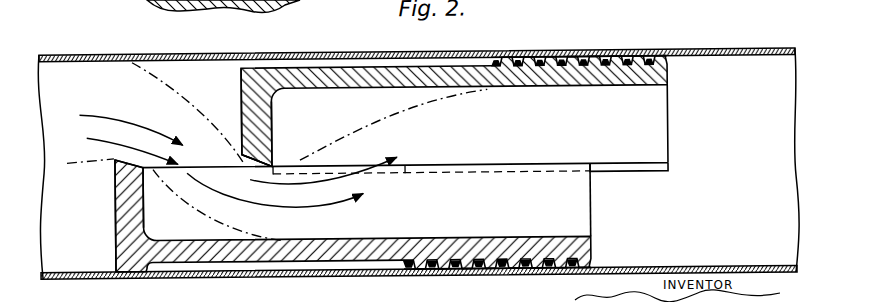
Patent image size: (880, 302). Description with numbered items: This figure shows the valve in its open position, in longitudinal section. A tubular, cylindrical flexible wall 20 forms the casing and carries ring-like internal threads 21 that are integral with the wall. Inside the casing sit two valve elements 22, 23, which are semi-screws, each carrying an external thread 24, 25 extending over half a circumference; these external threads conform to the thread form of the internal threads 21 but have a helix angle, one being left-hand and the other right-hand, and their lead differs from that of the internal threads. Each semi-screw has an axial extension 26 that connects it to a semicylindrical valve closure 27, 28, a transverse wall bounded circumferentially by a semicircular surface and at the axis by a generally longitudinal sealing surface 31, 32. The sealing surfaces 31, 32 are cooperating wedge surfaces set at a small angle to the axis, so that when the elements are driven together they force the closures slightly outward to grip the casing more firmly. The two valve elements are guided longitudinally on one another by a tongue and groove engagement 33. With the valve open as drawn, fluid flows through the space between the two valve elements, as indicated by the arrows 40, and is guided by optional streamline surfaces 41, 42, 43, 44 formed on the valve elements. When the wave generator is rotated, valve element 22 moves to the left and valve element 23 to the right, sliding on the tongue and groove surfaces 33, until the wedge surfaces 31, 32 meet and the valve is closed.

The flexible wall 20 is at (713, 50).
The internal threads 21 is at (549, 53).
The valve element 22 is at (657, 118).
The valve element 23 is at (578, 222).
The external thread 24 is at (581, 64).
The external thread 25 is at (481, 261).
The axial extension 26 is at (353, 84).
The semicylindrical valve closure 27 is at (241, 101).
The semicylindrical valve closure 28 is at (117, 205).
The sealing surface 31 is at (268, 130).
The sealing surface 32 is at (114, 168).
The tongue and groove engagement 33 is at (633, 174).
The arrows 40 is at (363, 163).
The streamline surface 41 is at (190, 98).
The streamline surface 42 is at (366, 134).
The streamline surface 43 is at (68, 160).
The streamline surface 44 is at (181, 196).